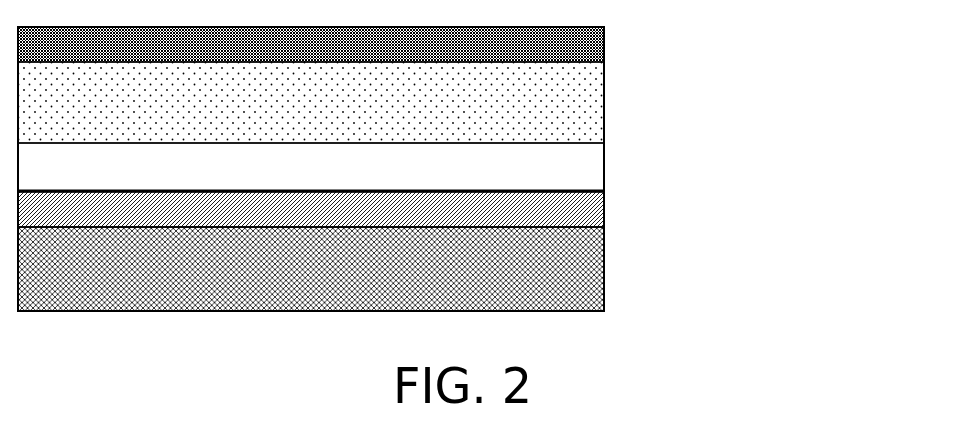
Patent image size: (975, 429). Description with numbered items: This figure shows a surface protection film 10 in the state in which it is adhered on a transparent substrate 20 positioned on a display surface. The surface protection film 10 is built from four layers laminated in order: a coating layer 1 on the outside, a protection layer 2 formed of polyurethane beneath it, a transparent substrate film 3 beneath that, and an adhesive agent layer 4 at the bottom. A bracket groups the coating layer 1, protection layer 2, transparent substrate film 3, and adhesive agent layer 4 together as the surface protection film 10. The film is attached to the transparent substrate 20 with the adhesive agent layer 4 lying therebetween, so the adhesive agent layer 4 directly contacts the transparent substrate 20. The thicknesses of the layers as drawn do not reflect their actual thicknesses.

The surface protection film 10 is at (820, 10).
The coating layer 1 is at (587, 43).
The protection layer 2 is at (578, 100).
The transparent substrate film 3 is at (582, 162).
The adhesive agent layer 4 is at (582, 222).
The transparent substrate 20 is at (580, 292).